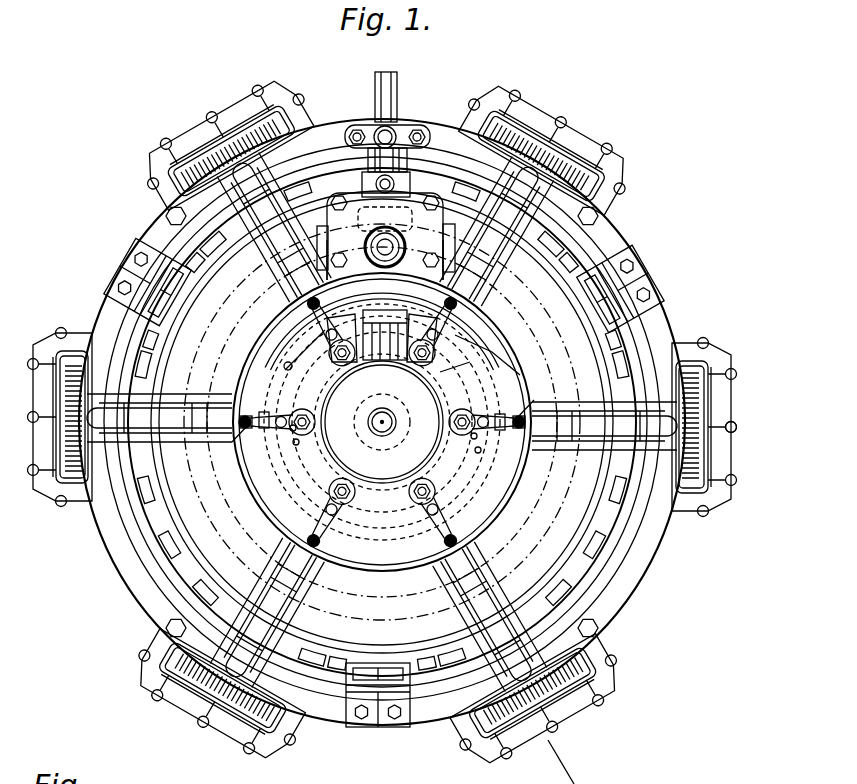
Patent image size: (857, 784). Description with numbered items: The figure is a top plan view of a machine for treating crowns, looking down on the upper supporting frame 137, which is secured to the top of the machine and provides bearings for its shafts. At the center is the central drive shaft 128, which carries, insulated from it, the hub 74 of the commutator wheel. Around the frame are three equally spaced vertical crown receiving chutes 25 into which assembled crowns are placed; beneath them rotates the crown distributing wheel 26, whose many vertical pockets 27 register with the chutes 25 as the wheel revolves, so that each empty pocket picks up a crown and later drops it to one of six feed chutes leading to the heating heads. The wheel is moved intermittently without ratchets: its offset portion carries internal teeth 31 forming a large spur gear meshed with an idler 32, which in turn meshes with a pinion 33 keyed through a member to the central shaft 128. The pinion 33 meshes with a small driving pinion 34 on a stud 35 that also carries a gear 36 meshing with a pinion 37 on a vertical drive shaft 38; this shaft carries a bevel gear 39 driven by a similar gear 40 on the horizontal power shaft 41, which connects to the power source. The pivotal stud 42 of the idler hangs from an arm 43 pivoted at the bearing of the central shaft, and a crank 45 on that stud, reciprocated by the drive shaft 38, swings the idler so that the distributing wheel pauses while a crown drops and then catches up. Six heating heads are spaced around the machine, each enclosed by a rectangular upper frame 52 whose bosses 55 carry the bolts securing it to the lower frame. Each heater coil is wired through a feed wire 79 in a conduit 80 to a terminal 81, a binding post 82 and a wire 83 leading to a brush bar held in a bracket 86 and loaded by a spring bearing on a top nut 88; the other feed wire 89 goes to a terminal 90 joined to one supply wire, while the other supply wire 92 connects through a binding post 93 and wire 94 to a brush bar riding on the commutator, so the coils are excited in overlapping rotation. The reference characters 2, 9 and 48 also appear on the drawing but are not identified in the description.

The engine unit 2 is at (384, 44).
The bracket 9 is at (332, 255).
The crown receiving chute 25 is at (632, 292).
The crown distributing wheel 26 is at (628, 348).
The vertical pockets 27 is at (572, 260).
The teeth 31 is at (186, 470).
The idler 32 is at (208, 362).
The pinion 33 is at (452, 378).
The small driving pinion 34 is at (350, 335).
The stud 35 is at (410, 337).
The gear 36 is at (403, 392).
The pinion 37 is at (381, 192).
The vertical drive shaft 38 is at (366, 250).
The bevel gear 39 is at (430, 258).
The gear 40 is at (437, 232).
The horizontal power shaft 41 is at (392, 100).
The pivotal stud 42 is at (290, 320).
The arm 43 is at (316, 424).
The crank 45 is at (300, 300).
The cylinder fins 48 is at (692, 418).
The upper frame 52 is at (725, 358).
The bosses 55 is at (735, 427).
The hub 74 is at (382, 422).
The feed wire 79 is at (233, 440).
The conduit 80 is at (505, 238).
The terminal 81 is at (267, 414).
The binding post 82 is at (292, 427).
The wire 83 is at (295, 442).
The bracket 86 is at (492, 352).
The top nut 88 is at (436, 437).
The feed wire 89 is at (237, 397).
The terminal 90 is at (270, 355).
The supply wire 92 is at (333, 243).
The binding post 93 is at (395, 282).
The wire 94 is at (395, 255).
The central drive shaft 128 is at (398, 422).
The upper supporting frame 137 is at (408, 138).